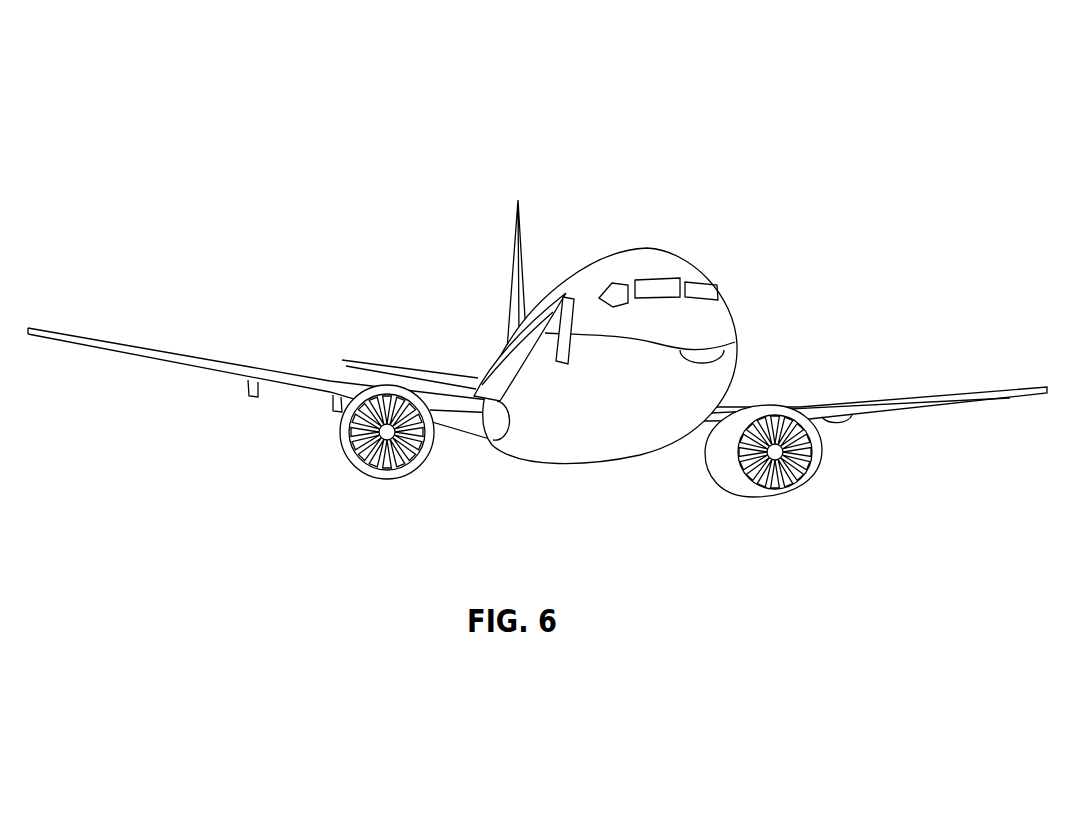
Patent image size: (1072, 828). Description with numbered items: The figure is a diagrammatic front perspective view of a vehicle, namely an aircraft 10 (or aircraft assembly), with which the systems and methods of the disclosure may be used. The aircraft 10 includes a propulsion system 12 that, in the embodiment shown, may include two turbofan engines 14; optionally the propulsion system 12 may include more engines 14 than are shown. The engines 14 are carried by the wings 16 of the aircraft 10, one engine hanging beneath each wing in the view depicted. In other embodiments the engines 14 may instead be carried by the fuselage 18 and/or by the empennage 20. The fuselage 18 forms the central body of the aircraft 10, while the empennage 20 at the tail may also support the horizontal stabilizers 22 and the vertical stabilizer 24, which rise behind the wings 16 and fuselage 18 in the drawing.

The aircraft 10 is at (284, 149).
The propulsion system 12 is at (858, 491).
The turbofan engines 14 is at (383, 478).
The wings 16 is at (164, 356).
The fuselage 18 is at (738, 313).
The empennage 20 is at (507, 346).
The horizontal stabilizers 22 is at (383, 364).
The vertical stabilizer 24 is at (517, 238).